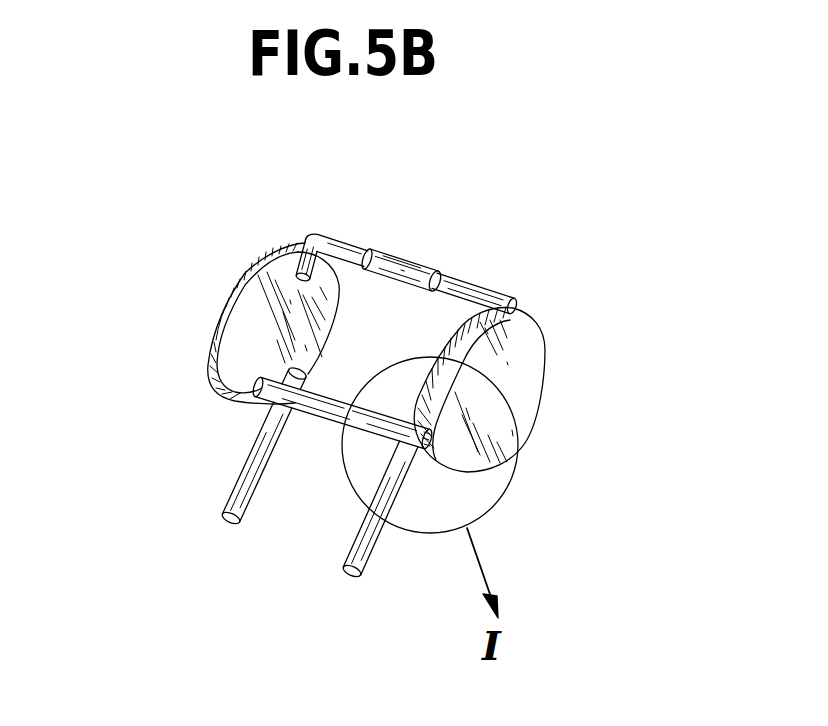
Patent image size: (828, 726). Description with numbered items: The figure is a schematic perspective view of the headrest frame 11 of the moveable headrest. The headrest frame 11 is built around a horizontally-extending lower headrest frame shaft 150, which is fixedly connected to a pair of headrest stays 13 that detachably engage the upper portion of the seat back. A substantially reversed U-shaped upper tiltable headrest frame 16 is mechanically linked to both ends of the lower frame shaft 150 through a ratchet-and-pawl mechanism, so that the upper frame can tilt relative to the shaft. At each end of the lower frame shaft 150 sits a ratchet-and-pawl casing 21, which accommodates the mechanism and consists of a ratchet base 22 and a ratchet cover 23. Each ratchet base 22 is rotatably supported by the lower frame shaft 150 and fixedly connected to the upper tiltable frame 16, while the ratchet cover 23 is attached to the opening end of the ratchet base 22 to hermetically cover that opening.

The headrest frame 11 is at (442, 267).
The headrest stays 13 is at (246, 499).
The upper tiltable headrest frame 16 is at (477, 285).
The ratchet-and-pawl casing 21 is at (206, 357).
The ratchet base 22 is at (253, 320).
The ratchet cover 23 is at (258, 258).
The lower headrest frame shaft 150 is at (330, 410).